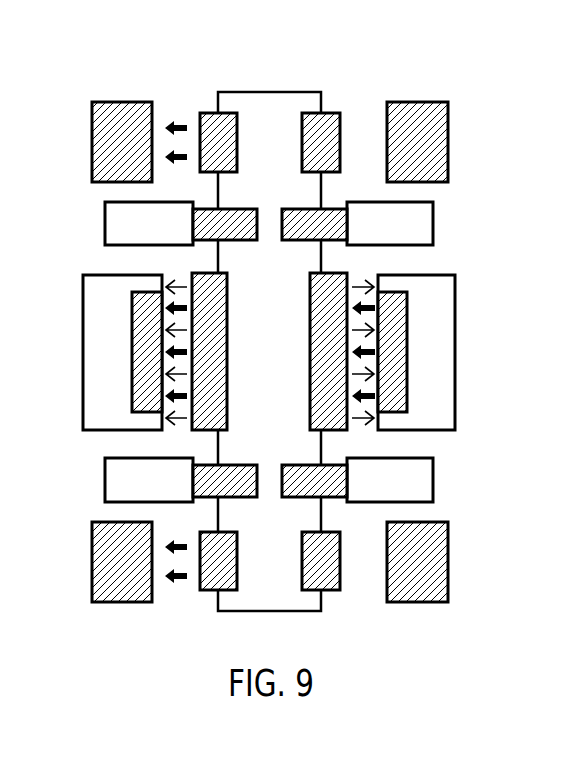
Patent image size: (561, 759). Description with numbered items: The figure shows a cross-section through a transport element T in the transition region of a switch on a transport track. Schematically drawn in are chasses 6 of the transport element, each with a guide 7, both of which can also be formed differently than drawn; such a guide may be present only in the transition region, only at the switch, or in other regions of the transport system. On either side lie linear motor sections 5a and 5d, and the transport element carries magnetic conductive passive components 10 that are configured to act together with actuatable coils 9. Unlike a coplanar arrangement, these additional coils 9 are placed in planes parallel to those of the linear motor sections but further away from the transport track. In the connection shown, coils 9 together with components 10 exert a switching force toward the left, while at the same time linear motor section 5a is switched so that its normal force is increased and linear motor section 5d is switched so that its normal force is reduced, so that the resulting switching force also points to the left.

The transport element T is at (269, 323).
The linear motor section 5a is at (145, 330).
The linear motor section 5d is at (405, 327).
The chassis 6 is at (242, 242).
The guide 7 is at (113, 222).
The actuatable coil 9 is at (105, 108).
The magnetic conductive passive component 10 is at (213, 120).